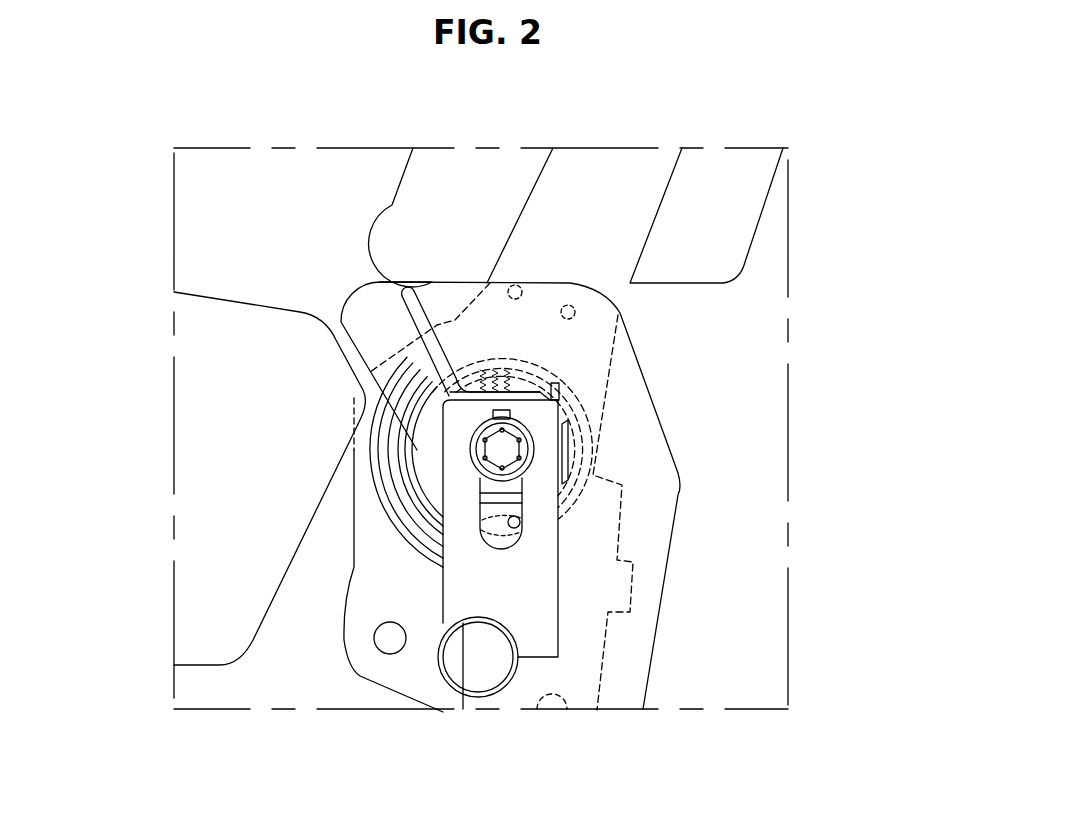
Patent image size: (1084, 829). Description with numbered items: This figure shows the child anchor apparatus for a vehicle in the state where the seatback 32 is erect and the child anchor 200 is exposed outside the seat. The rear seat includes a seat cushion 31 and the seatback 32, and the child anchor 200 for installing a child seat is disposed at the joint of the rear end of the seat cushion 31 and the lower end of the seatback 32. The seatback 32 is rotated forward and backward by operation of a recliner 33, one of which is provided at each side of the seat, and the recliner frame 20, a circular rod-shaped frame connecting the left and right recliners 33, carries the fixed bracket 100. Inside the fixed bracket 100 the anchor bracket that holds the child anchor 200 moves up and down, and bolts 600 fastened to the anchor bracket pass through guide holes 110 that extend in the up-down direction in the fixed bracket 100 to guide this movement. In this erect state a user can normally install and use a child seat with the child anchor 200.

The recliner frame 20 is at (440, 673).
The seat cushion 31 is at (203, 417).
The seatback 32 is at (722, 213).
The recliner 33 is at (403, 468).
The fixed bracket 100 is at (525, 578).
The guide hole 110 is at (518, 524).
The child anchor 200 is at (417, 310).
The bolt 600 is at (502, 452).